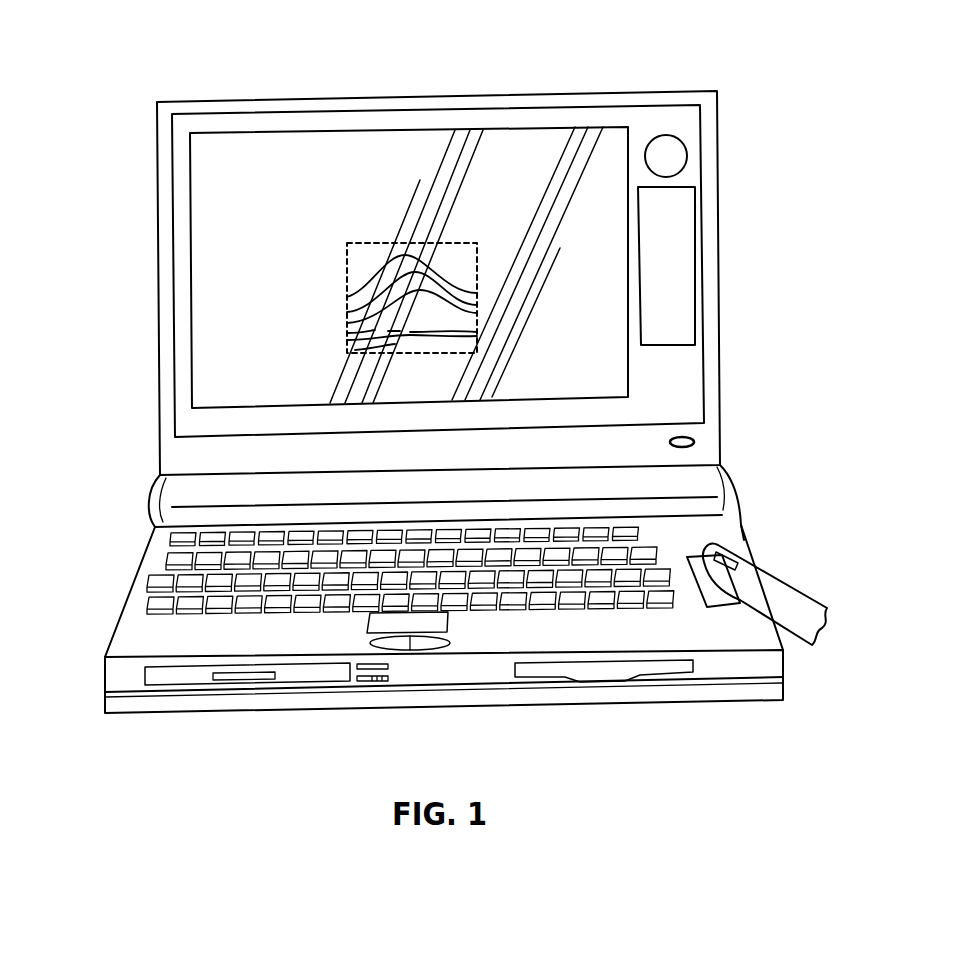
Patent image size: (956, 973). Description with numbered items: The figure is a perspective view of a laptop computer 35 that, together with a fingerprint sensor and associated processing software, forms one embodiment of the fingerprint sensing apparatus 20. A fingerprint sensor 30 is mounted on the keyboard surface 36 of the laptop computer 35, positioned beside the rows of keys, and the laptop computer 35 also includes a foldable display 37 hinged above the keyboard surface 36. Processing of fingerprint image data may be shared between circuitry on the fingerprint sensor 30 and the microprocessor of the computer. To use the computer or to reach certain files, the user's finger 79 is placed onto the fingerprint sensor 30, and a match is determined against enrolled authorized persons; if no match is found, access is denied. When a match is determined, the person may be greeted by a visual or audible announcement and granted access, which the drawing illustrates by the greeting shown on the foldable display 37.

The fingerprint sensing apparatus 20 is at (280, 62).
The fingerprint sensor 30 is at (715, 597).
The laptop computer 35 is at (462, 97).
The keyboard surface 36 is at (160, 577).
The foldable display 37 is at (208, 290).
The finger 79 is at (795, 588).